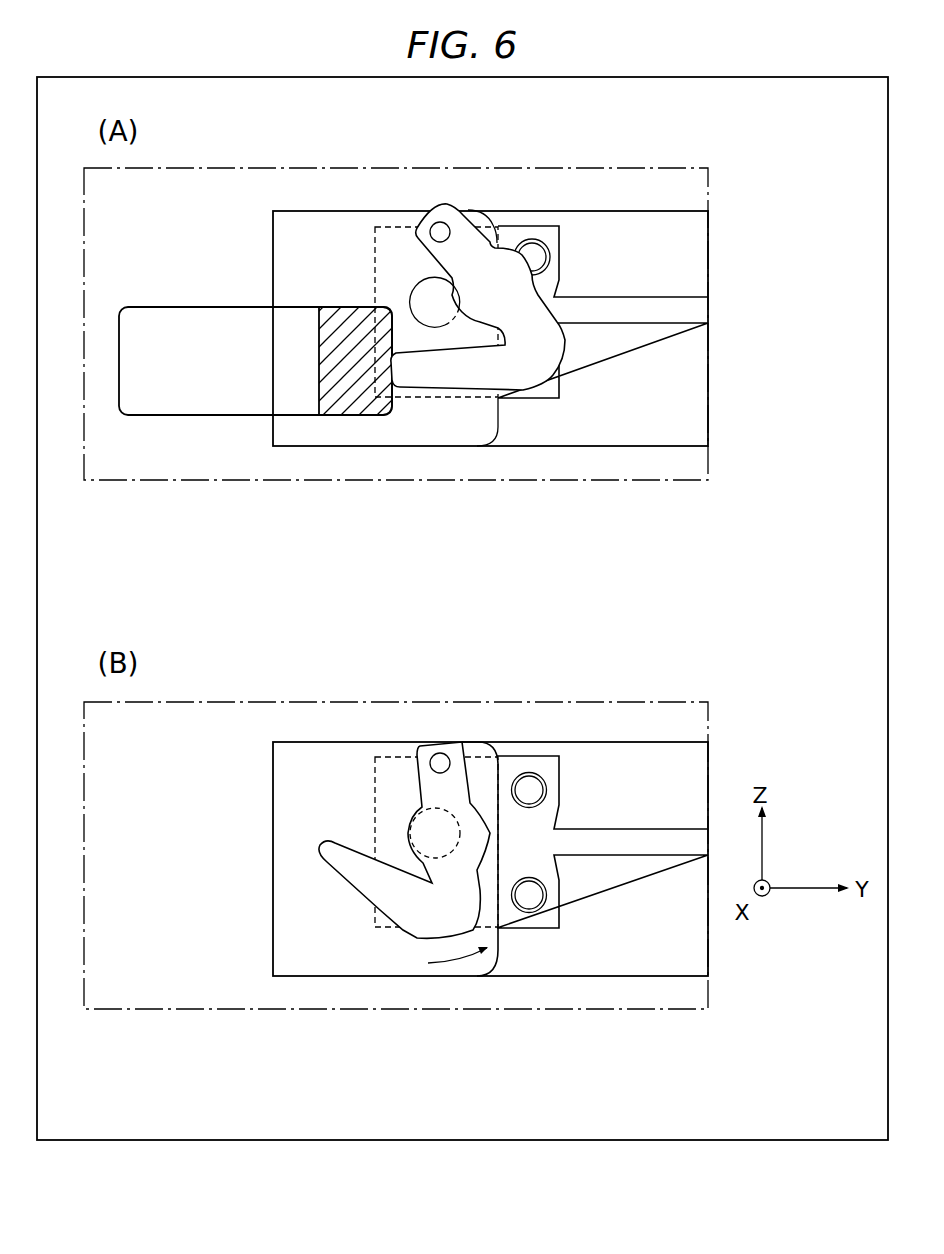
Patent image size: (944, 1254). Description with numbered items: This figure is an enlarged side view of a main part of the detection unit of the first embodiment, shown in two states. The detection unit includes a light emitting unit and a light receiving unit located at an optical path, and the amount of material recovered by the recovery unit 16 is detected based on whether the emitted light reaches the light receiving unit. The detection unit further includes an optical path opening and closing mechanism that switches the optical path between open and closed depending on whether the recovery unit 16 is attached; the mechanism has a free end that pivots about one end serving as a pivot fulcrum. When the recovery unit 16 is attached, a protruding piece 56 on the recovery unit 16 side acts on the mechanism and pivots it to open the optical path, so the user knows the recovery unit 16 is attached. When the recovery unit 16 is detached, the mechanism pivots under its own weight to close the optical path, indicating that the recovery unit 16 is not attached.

The recovery unit 16 is at (255, 422).
The protruding piece 56 is at (250, 392).